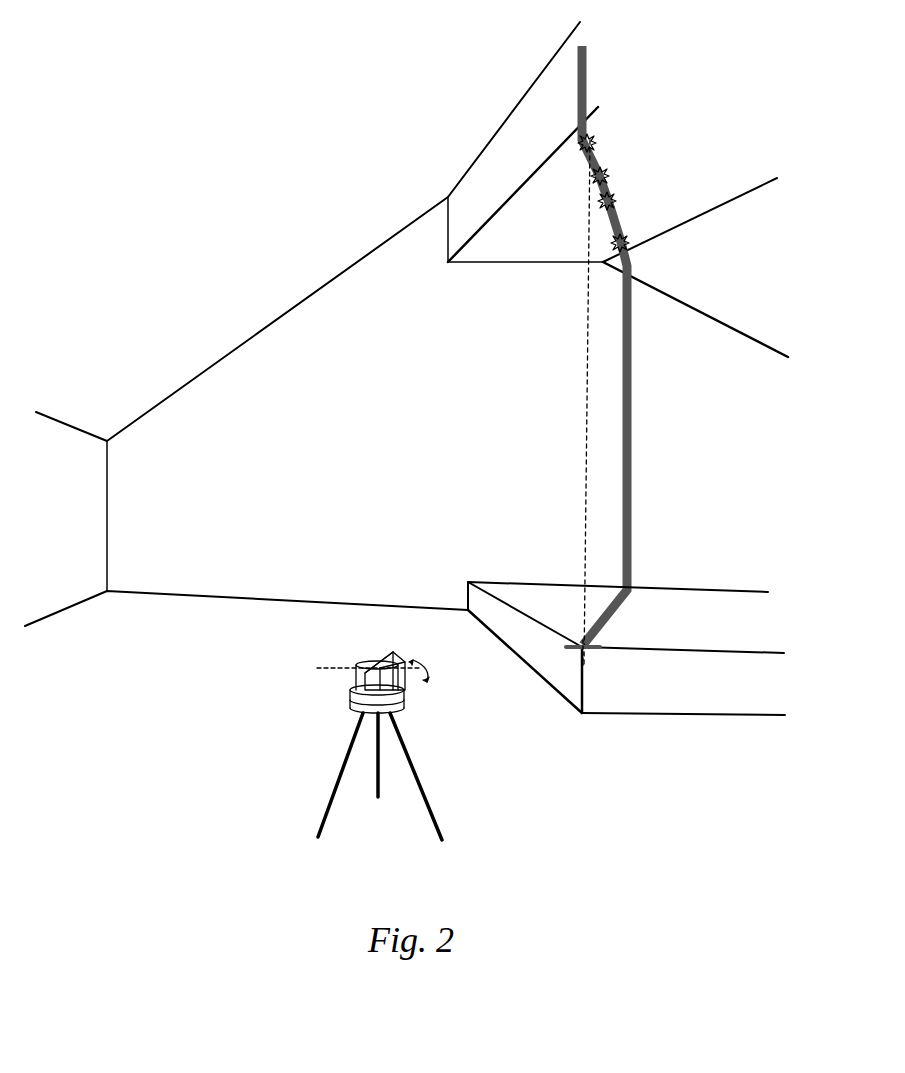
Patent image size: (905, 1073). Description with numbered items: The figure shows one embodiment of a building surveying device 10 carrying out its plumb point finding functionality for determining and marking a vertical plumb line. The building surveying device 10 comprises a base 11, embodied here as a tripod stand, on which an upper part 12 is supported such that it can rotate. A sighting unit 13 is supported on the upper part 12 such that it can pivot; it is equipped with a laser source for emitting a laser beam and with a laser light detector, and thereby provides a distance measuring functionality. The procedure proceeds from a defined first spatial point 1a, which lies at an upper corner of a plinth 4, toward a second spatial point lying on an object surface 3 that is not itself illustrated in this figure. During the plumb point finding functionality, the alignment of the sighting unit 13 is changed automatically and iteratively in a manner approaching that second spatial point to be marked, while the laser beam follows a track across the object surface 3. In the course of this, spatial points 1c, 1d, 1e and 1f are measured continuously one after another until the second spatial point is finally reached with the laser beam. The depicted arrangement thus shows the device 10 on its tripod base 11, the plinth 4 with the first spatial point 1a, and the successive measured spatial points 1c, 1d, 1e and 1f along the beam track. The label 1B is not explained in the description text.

The first spatial point 1a is at (549, 662).
The spatial point 1c is at (662, 251).
The spatial point 1d is at (653, 197).
The spatial point 1e is at (640, 167).
The spatial point 1f is at (628, 128).
The laser beam 1B is at (634, 463).
The object surface 3 is at (522, 247).
The plinth 4 is at (615, 682).
The building surveying device 10 is at (352, 724).
The base 11 is at (353, 707).
The upper part 12 is at (345, 665).
The sighting unit 13 is at (400, 657).